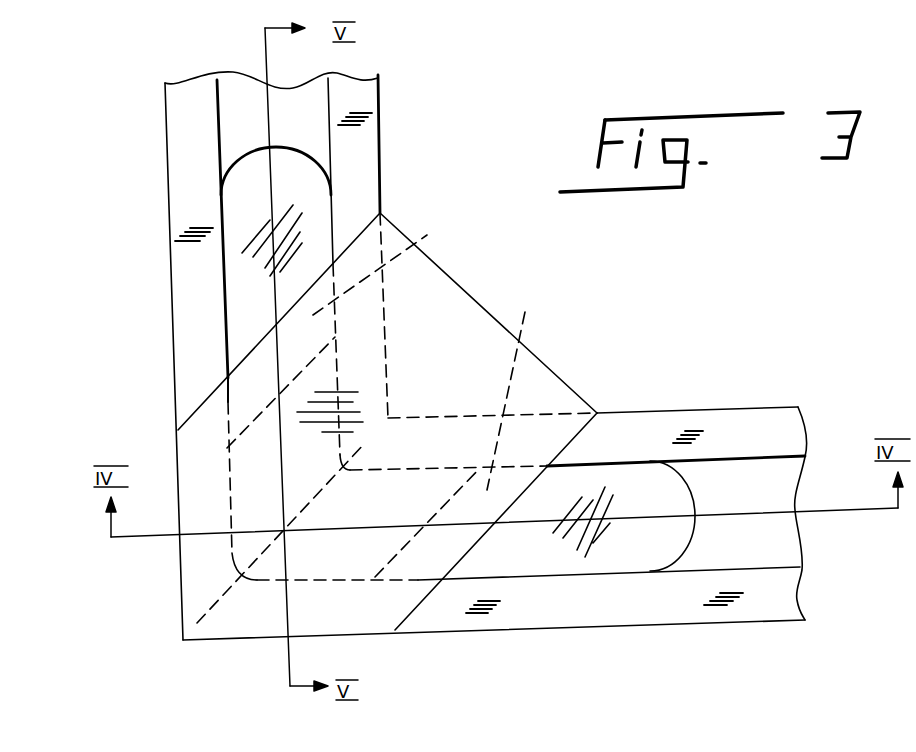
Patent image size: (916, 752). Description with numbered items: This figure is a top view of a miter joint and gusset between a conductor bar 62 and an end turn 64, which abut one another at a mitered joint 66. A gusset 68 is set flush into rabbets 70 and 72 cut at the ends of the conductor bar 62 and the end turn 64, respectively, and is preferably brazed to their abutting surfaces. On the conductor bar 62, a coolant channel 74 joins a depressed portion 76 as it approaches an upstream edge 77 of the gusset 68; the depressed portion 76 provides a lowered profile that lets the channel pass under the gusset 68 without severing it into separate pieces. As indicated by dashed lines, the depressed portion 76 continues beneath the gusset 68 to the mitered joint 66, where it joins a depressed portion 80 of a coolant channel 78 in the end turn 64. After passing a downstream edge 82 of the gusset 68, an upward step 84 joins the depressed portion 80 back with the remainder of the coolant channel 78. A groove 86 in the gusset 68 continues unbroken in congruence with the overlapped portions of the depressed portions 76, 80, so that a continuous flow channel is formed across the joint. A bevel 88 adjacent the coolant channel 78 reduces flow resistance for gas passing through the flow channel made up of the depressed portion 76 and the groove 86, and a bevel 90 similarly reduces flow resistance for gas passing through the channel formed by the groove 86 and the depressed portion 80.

The conductor bar 62 is at (725, 412).
The end turn 64 is at (370, 155).
The mitered joint 66 is at (210, 610).
The gusset 68 is at (525, 363).
The rabbet 70 is at (430, 600).
The rabbet 72 is at (198, 403).
The coolant channel 74 is at (742, 543).
The depressed portion 76 is at (652, 550).
The upstream edge 77 is at (565, 448).
The coolant channel 78 is at (318, 108).
The depressed portion 80 is at (318, 380).
The downstream edge 82 is at (248, 352).
The upward step 84 is at (283, 152).
The groove 86 is at (228, 450).
The bevel 88 is at (515, 387).
The bevel 90 is at (427, 235).